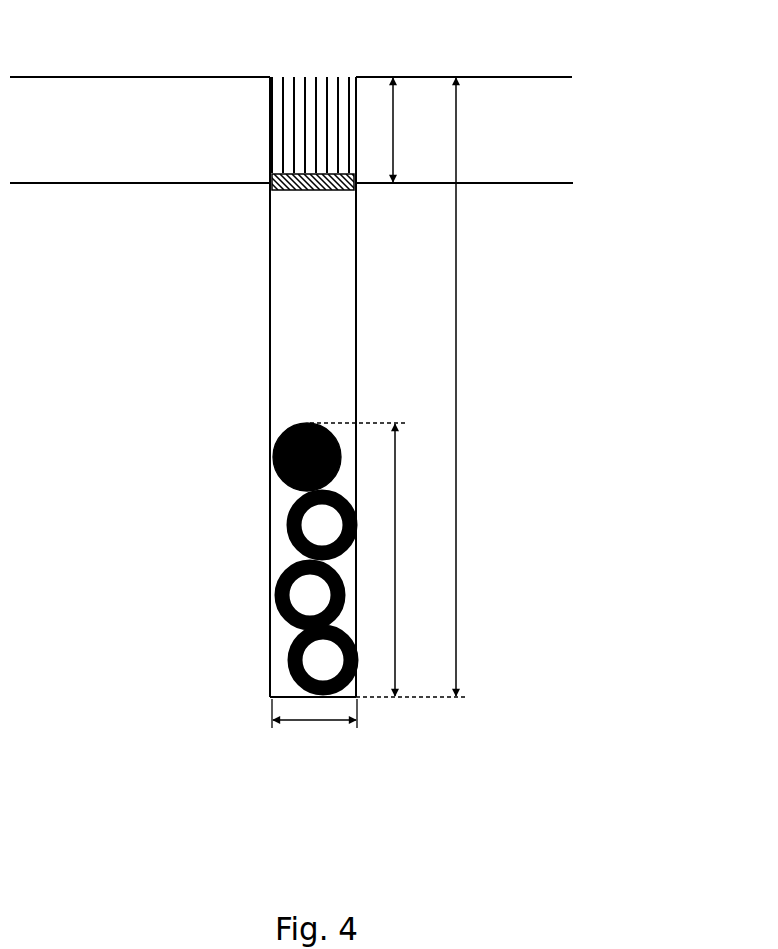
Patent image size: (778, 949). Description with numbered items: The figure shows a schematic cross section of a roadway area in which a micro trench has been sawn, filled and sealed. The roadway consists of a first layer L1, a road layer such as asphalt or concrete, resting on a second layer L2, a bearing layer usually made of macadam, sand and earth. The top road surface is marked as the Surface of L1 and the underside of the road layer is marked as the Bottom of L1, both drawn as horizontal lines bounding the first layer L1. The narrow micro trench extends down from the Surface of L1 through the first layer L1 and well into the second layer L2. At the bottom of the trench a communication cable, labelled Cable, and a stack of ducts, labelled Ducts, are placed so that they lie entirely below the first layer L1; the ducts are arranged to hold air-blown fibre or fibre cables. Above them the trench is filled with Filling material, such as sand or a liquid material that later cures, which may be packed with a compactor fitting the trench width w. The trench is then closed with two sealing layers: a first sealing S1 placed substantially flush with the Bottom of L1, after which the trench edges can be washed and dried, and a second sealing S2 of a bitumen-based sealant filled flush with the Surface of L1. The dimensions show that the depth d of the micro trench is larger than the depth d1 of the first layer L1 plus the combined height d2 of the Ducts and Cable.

The first layer L1 is at (291, 130).
The second layer L2 is at (64, 408).
The surface of the first layer Surface of L1 is at (570, 45).
The bottom of the first layer Bottom of L1 is at (562, 222).
The filling material Filling material is at (307, 310).
The second sealing S2 is at (297, 90).
The first sealing S1 is at (277, 188).
The communication cable Cable is at (272, 463).
The ducts Ducts is at (292, 662).
The depth of the first layer d1 is at (414, 130).
The depth of the micro trench d is at (472, 387).
The height of the ducts and communication cable d2 is at (388, 560).
The width of the micro trench w is at (314, 723).